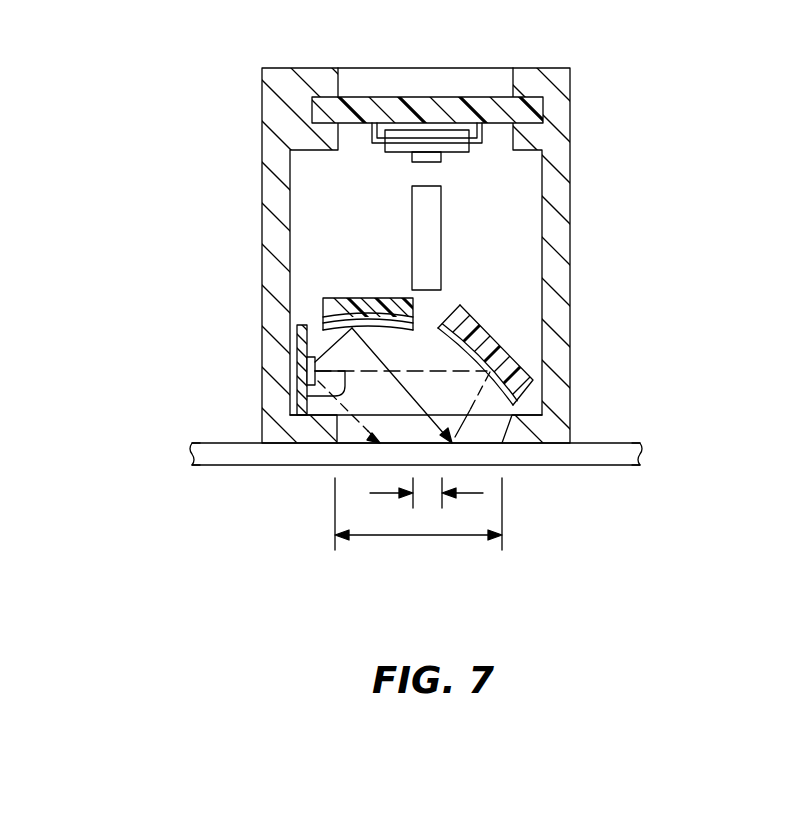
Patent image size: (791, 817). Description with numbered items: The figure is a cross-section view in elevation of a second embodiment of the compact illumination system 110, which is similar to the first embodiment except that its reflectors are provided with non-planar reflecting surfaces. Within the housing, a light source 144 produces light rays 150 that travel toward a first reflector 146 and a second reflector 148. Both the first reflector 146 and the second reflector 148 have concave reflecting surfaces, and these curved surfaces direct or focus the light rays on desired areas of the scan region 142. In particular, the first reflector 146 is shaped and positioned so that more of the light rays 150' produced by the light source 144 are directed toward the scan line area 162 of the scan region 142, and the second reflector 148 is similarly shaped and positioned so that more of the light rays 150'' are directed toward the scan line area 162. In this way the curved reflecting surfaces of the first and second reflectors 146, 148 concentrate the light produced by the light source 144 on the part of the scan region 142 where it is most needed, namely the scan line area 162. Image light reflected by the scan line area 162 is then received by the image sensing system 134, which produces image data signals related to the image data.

The compact illumination system 110 is at (177, 55).
The image sensing system 134 is at (343, 173).
The light source 144 is at (300, 326).
The first reflector 146 is at (345, 297).
The second reflector 148 is at (519, 361).
The light rays 150 is at (316, 442).
The light rays 150' is at (313, 385).
The light rays 150'' is at (260, 392).
The scan region 142 is at (417, 540).
The scan line area 162 is at (473, 493).